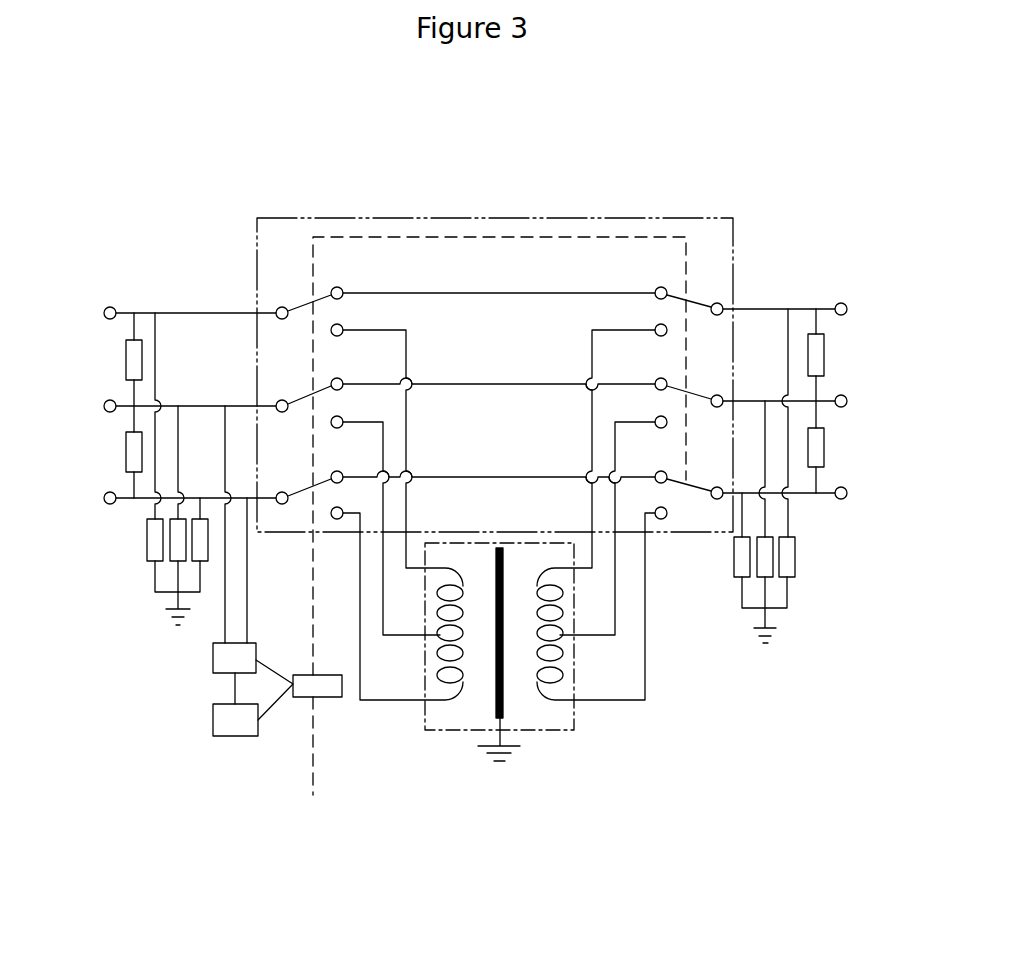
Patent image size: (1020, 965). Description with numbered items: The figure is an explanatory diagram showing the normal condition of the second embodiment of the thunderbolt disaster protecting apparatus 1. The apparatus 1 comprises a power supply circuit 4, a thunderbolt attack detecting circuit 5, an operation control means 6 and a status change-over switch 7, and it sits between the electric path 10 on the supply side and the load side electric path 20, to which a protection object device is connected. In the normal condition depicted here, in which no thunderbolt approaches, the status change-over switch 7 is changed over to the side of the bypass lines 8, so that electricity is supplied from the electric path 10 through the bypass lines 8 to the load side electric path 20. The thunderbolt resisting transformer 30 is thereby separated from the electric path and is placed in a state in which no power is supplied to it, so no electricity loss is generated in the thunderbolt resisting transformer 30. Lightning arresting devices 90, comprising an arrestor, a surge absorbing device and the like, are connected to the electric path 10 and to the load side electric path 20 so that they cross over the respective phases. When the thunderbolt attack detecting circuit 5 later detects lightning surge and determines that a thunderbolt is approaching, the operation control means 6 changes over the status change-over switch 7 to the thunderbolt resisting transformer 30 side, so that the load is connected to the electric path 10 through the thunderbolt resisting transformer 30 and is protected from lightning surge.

The thunderbolt disaster protecting apparatus 1 is at (376, 204).
The power supply circuit 4 is at (213, 662).
The thunderbolt attack detecting circuit 5 is at (213, 722).
The operation control means 6 is at (471, 533).
The status change-over switch 7 is at (296, 296).
The bypass lines 8 is at (495, 459).
The electric path 10 is at (165, 306).
The load side electric path 20 is at (811, 296).
The thunderbolt resisting transformer 30 is at (432, 743).
The lightning arresting devices 90 is at (127, 356).